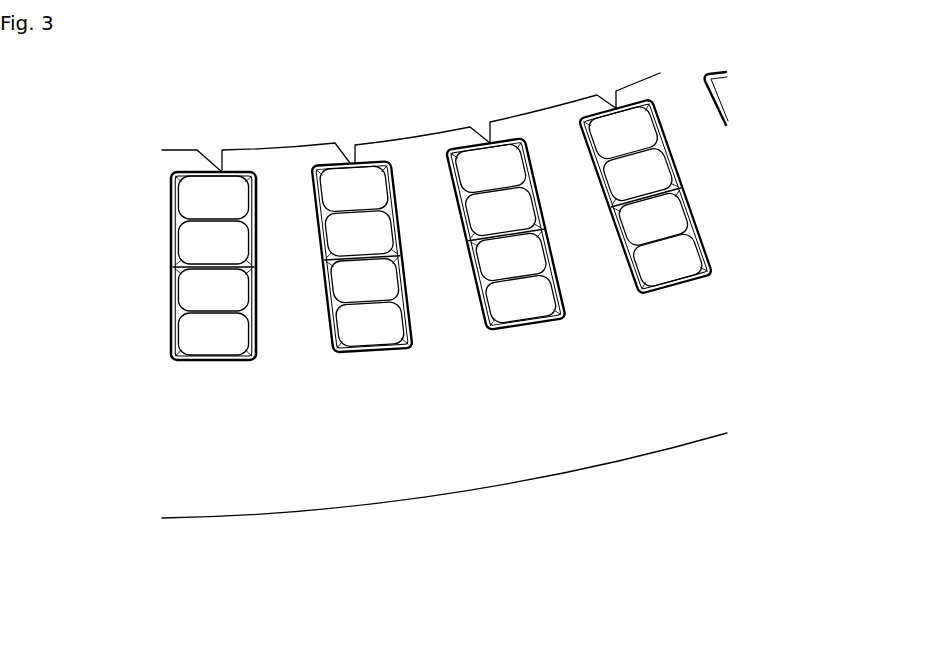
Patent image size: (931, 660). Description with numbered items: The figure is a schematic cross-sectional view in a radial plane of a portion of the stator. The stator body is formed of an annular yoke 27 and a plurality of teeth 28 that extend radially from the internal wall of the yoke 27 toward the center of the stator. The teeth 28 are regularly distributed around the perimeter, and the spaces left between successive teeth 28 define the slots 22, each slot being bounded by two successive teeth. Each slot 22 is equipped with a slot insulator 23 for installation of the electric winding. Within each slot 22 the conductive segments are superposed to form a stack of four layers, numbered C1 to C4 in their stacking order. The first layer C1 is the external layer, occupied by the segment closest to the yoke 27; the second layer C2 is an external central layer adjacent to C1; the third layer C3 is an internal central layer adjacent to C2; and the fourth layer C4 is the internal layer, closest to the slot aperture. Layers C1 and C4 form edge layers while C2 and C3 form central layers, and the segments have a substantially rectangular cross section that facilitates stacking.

The slot 22 is at (552, 332).
The slot insulator 23 is at (173, 357).
The teeth 28 is at (268, 240).
The yoke 27 is at (267, 462).
The first layer C1 is at (680, 258).
The second layer C2 is at (665, 210).
The third layer C3 is at (650, 165).
The fourth layer C4 is at (632, 122).